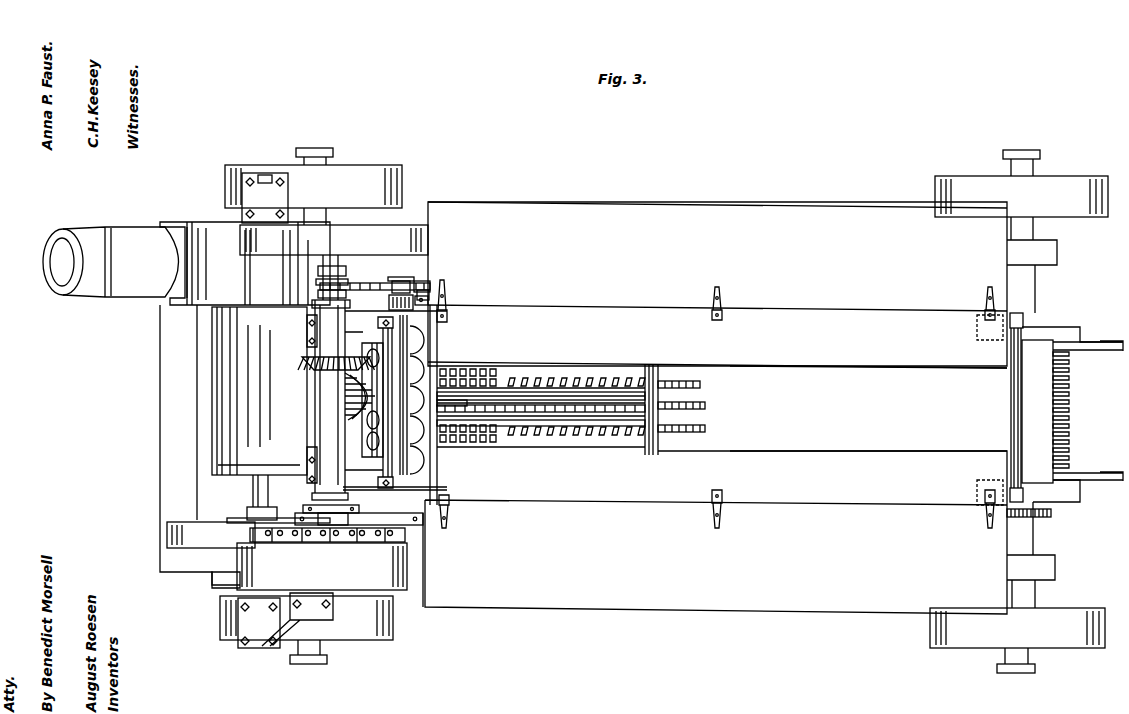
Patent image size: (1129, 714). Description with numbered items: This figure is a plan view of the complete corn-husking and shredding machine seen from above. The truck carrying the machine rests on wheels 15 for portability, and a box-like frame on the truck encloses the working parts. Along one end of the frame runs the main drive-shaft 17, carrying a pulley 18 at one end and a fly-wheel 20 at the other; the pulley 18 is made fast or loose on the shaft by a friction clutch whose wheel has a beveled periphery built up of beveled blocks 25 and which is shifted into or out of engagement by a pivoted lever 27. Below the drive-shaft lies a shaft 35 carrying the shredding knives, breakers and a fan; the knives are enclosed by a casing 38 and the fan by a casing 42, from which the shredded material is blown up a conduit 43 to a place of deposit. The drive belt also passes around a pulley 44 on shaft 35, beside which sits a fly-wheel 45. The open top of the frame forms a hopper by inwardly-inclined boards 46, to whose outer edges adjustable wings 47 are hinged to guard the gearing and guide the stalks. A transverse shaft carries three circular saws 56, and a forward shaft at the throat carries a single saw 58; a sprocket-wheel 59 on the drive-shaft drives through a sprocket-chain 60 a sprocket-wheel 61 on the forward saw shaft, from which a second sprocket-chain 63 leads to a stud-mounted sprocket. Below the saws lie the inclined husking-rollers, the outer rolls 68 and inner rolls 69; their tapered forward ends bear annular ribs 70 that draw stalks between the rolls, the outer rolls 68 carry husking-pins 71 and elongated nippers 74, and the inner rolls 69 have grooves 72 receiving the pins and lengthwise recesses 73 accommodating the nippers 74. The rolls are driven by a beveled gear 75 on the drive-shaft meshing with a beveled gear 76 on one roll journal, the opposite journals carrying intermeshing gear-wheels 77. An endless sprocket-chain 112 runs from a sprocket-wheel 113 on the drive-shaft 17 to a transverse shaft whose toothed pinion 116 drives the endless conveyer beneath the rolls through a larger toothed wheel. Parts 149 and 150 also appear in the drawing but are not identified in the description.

The wheels 15 is at (383, 172).
The main drive-shaft 17 is at (320, 443).
The pulley 18 is at (408, 593).
The fly-wheel 20 is at (393, 239).
The beveled blocks 25 is at (406, 536).
The lever 27 is at (420, 516).
The shaft 35 is at (250, 492).
The casing 38 is at (213, 438).
The casing 42 is at (195, 301).
The conduit 43 is at (128, 289).
The pulley 44 is at (233, 583).
The fly-wheel 45 is at (167, 540).
The inwardly-inclined boards 46 is at (815, 366).
The wings 47 is at (773, 207).
The saws 56 is at (703, 384).
The saw 58 is at (460, 375).
The sprocket-wheel 59 is at (346, 288).
The sprocket-chain 60 is at (383, 283).
The sprocket-wheel 61 is at (419, 292).
The sprocket-chain 63 is at (425, 296).
The outer rolls 68 is at (567, 370).
The inner rolls 69 is at (612, 375).
The annular beads or ribs 70 is at (447, 372).
The husking-pins 71 is at (547, 374).
The elongated grooves or recesses 72 is at (585, 378).
The elongated recesses 73 is at (510, 376).
The nippers 74 is at (553, 366).
The beveled gear 75 is at (305, 362).
The beveled gear 76 is at (343, 405).
The gear-wheels 77 is at (1072, 370).
The endless sprocket-chain 112 is at (347, 268).
The sprocket-wheel 113 is at (316, 277).
The toothed pinion 116 is at (1050, 512).
The bracket 149 is at (428, 299).
The clamp 150 is at (446, 318).